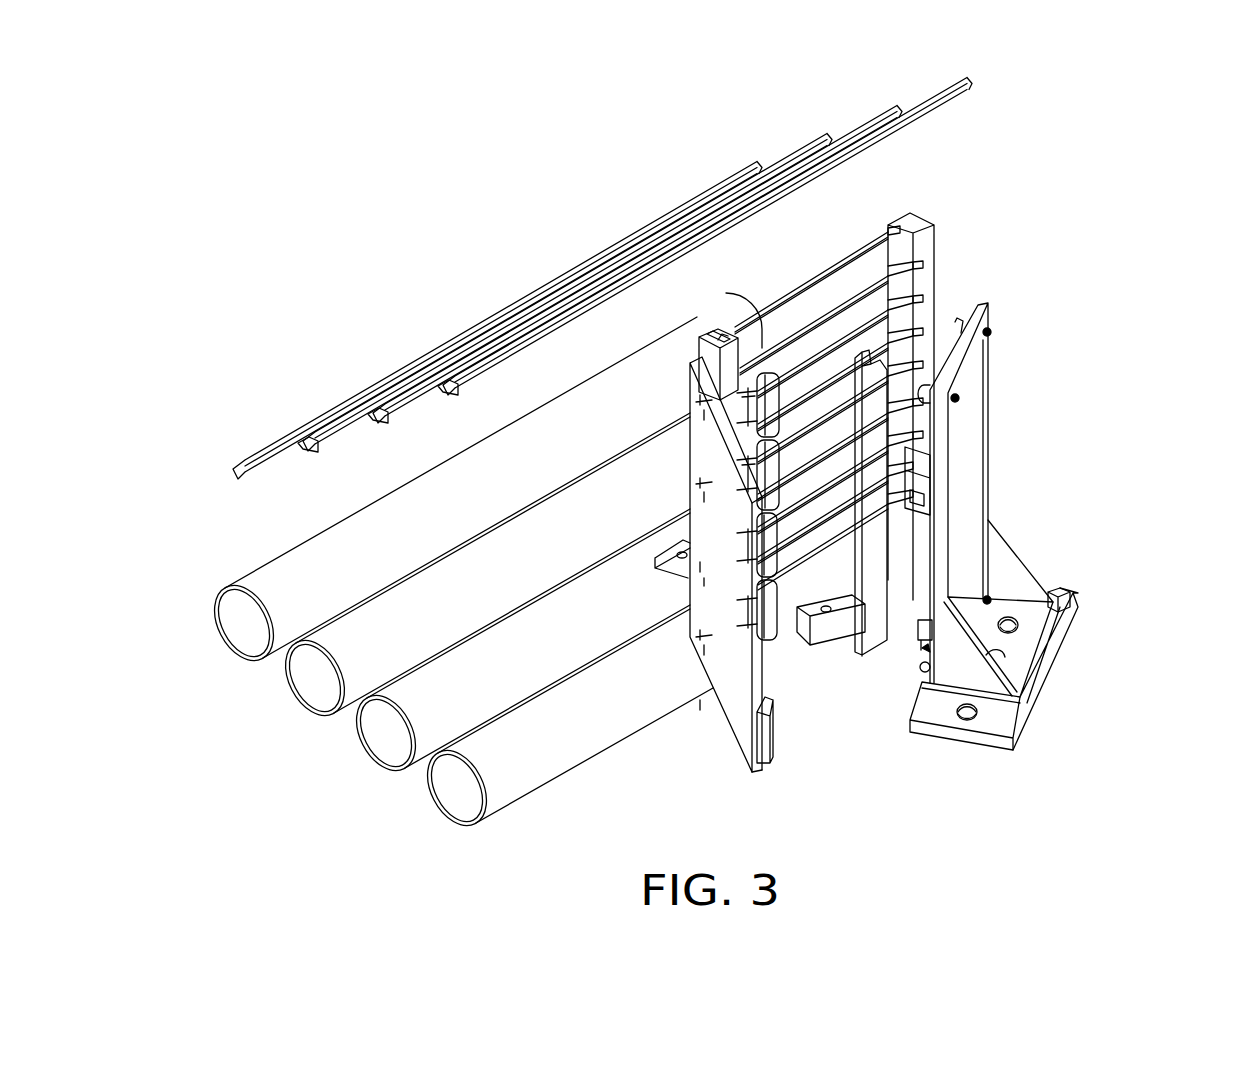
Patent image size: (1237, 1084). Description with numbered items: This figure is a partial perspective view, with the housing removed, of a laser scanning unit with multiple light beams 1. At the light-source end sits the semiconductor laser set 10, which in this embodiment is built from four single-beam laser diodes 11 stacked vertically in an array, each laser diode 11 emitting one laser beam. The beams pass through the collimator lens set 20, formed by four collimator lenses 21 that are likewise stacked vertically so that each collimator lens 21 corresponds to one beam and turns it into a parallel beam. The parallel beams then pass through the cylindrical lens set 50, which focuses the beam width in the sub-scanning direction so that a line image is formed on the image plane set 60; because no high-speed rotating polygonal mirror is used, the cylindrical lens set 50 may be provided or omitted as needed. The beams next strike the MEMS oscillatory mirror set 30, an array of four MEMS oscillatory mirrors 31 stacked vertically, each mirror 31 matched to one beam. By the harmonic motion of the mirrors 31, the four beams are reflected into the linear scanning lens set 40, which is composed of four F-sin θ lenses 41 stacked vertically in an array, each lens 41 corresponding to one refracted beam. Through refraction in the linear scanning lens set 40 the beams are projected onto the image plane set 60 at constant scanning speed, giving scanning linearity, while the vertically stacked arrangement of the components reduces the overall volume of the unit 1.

The laser scanning unit with multiple light beams 1 is at (1117, 226).
The semiconductor laser set 10 is at (690, 400).
The single-beam laser diode 11 is at (720, 336).
The collimator lens set 20 is at (697, 356).
The collimator lens 21 is at (780, 353).
The MEMS oscillatory mirror set 30 is at (990, 396).
The MEMS oscillatory mirror 31 is at (927, 585).
The linear scanning lens set 40 is at (938, 237).
The F-sin θ lens 41 is at (813, 272).
The cylindrical lens set 50 is at (872, 586).
The image plane set 60 is at (302, 543).